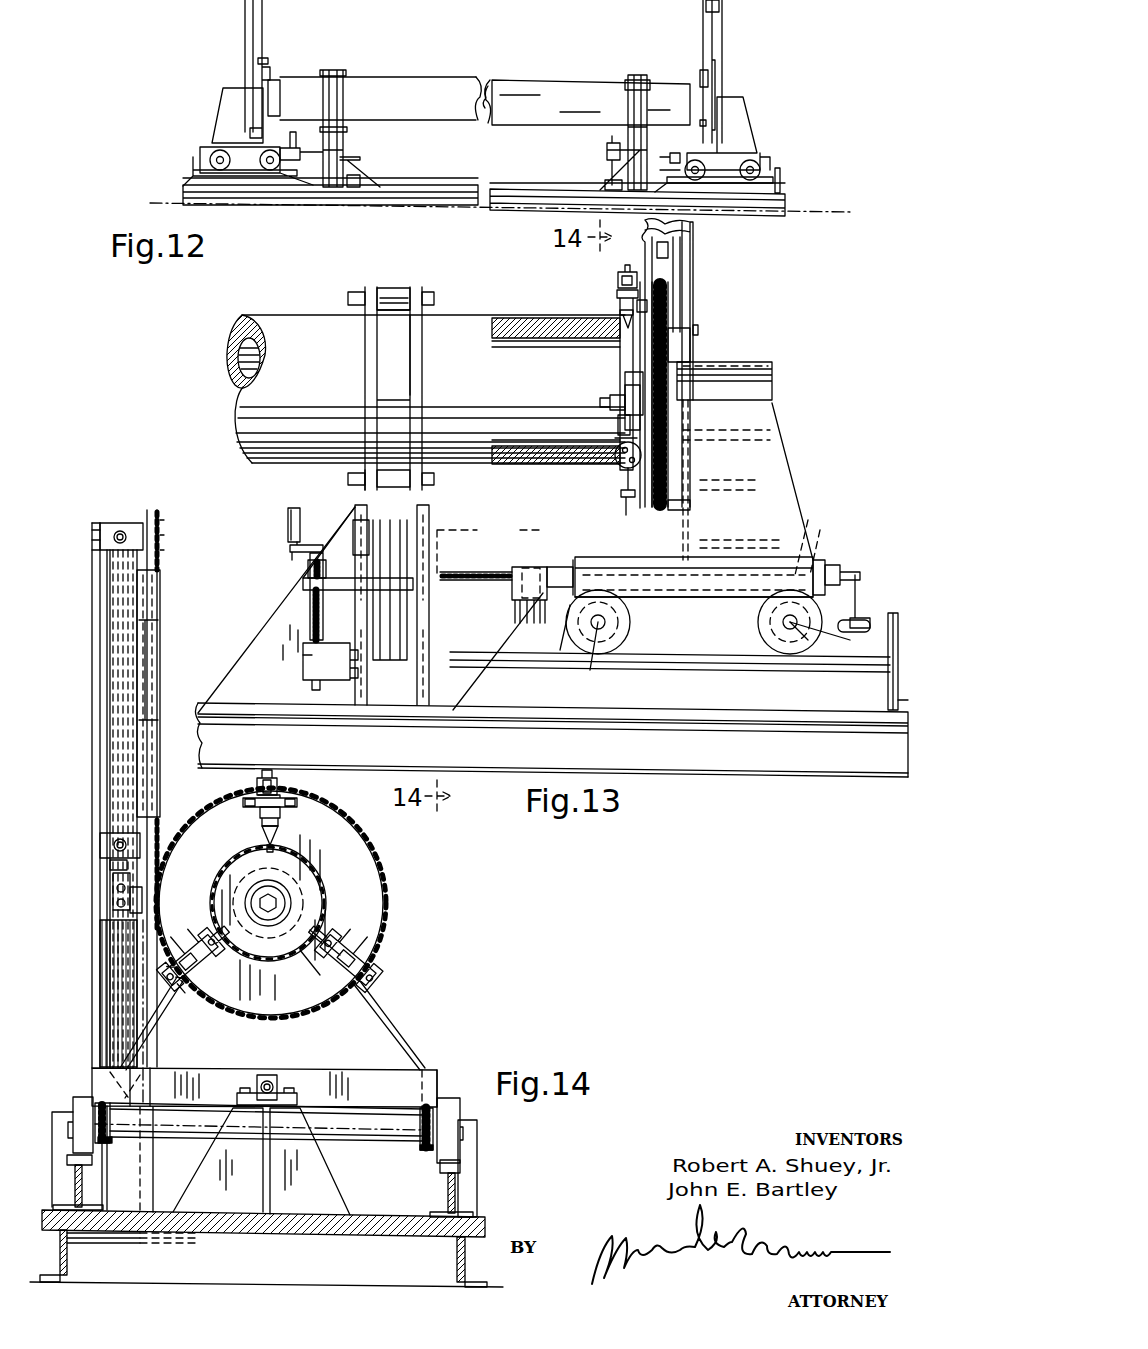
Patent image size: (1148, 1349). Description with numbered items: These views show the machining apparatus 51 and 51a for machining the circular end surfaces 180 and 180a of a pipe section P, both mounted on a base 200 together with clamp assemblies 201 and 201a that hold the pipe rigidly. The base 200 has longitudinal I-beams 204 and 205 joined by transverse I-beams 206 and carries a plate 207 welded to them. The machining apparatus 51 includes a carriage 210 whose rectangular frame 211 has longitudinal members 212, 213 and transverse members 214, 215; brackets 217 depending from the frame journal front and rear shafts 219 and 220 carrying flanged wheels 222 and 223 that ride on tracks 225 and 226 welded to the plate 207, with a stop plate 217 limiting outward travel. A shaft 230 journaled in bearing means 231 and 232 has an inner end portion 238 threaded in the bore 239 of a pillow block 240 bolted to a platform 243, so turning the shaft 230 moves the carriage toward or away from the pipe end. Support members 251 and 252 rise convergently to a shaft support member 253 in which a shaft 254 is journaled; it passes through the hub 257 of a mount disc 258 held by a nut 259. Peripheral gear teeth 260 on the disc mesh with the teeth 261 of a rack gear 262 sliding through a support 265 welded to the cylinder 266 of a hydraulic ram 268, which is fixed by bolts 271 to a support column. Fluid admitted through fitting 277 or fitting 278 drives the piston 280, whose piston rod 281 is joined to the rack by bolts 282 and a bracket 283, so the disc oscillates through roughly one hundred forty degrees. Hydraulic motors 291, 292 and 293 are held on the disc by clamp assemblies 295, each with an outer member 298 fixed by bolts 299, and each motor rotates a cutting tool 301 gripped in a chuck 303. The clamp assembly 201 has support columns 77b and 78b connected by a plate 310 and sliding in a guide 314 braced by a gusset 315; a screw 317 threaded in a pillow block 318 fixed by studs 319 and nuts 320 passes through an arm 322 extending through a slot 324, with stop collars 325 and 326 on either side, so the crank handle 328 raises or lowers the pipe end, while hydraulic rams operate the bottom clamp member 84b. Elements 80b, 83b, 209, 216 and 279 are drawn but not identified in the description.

In FIG. 12, the machining apparatus 51 is at (692, 53).
In FIG. 13, the machining apparatus 51 is at (721, 286).
In FIG. 12, the machining apparatus 51a is at (274, 45).
In FIG. 12, the support column 77b is at (633, 108).
In FIG. 13, the support column 77b is at (368, 382).
In FIG. 12, the support column 78b is at (660, 114).
In FIG. 13, the support column 78b is at (422, 372).
In FIG. 13, the clamp 80b is at (400, 352).
In FIG. 13, the clamp cross bar 83b is at (392, 288).
In FIG. 13, the bottom clamp member 84b is at (415, 478).
In FIG. 12, the circular end surface 180 is at (278, 90).
In FIG. 12, the circular end surface 180a is at (700, 98).
In FIG. 13, the circular end surface 180a is at (635, 340).
In FIG. 12, the base 200 is at (452, 205).
In FIG. 12, the clamp assembly 201 is at (628, 67).
In FIG. 13, the clamp assembly 201 is at (446, 283).
In FIG. 12, the clamp assembly 201a is at (357, 66).
In FIG. 12, the longitudinal I-beam 204 is at (390, 205).
In FIG. 14, the longitudinal I-beam 204 is at (465, 1250).
In FIG. 14, the longitudinal I-beam 205 is at (60, 1265).
In FIG. 14, the transversely extending I-beam 206 is at (255, 1282).
In FIG. 13, the plate 207 is at (205, 700).
In FIG. 14, the plate 207 is at (485, 1217).
In FIG. 13, the base frame 209 is at (670, 762).
In FIG. 13, the carriage 210 is at (817, 558).
In FIG. 14, the rectangular frame 211 is at (460, 1055).
In FIG. 13, the longitudinal member 212 is at (708, 598).
In FIG. 14, the longitudinal member 212 is at (440, 1090).
In FIG. 14, the longitudinal member 213 is at (100, 1078).
In FIG. 13, the transverse member 214 is at (567, 567).
In FIG. 13, the transverse member 215 is at (828, 567).
In FIG. 14, the pinion 216 is at (425, 1148).
In FIG. 13, the bracket 217 is at (630, 615).
In FIG. 14, the bracket 217 is at (100, 1140).
In FIG. 13, the front shaft 219 is at (600, 628).
In FIG. 14, the front shaft 219 is at (348, 1132).
In FIG. 13, the rear shaft 220 is at (783, 625).
In FIG. 13, the flanged wheels 222 is at (580, 640).
In FIG. 13, the flanged wheels 223 is at (812, 640).
In FIG. 13, the track 225 is at (663, 714).
In FIG. 14, the track 225 is at (460, 1180).
In FIG. 14, the track 226 is at (85, 1195).
In FIG. 13, the shaft 230 is at (758, 569).
In FIG. 14, the shaft 230 is at (278, 1080).
In FIG. 13, the bearing means 231 is at (595, 575).
In FIG. 13, the bearing means 232 is at (819, 541).
In FIG. 13, the inner end portion 238 is at (475, 572).
In FIG. 13, the threaded bore 239 is at (520, 570).
In FIG. 13, the block 240 is at (512, 590).
In FIG. 14, the block 240 is at (272, 1075).
In FIG. 14, the platform 243 is at (303, 1110).
In FIG. 13, the support member 251 is at (782, 478).
In FIG. 14, the support member 251 is at (398, 1025).
In FIG. 14, the support member 252 is at (160, 1005).
In FIG. 13, the shaft support member 253 is at (762, 370).
In FIG. 13, the shaft 254 is at (612, 403).
In FIG. 13, the hub 257 is at (606, 398).
In FIG. 13, the mount disc 258 is at (652, 508).
In FIG. 13, the nut 259 is at (618, 420).
In FIG. 14, the peripheral gear teeth 260 is at (383, 910).
In FIG. 14, the teeth 261 is at (162, 540).
In FIG. 14, the rack gear 262 is at (165, 492).
In FIG. 14, the support 265 is at (160, 592).
In FIG. 14, the cylinder 266 is at (110, 645).
In FIG. 14, the hydraulic ram 268 is at (96, 590).
In FIG. 14, the bolts 271 is at (92, 523).
In FIG. 14, the fitting 277 is at (120, 525).
In FIG. 14, the fitting 278 is at (110, 838).
In FIG. 14, the column base 279 is at (100, 955).
In FIG. 14, the piston 280 is at (92, 542).
In FIG. 14, the piston rod 281 is at (110, 865).
In FIG. 14, the bolts 282 is at (115, 903).
In FIG. 14, the bracket 283 is at (130, 905).
In FIG. 14, the hydraulic motor 291 is at (278, 782).
In FIG. 14, the hydraulic motor 292 is at (345, 935).
In FIG. 14, the hydraulic motor 293 is at (198, 940).
In FIG. 14, the clamp assembly 295 is at (250, 810).
In FIG. 14, the outer member 298 is at (282, 825).
In FIG. 14, the bolts 299 is at (287, 810).
In FIG. 13, the cutting tool 301 is at (618, 318).
In FIG. 14, the cutting tool 301 is at (268, 847).
In FIG. 14, the chuck 303 is at (330, 952).
In FIG. 13, the plate 310 is at (400, 665).
In FIG. 13, the guide 314 is at (356, 508).
In FIG. 13, the reinforcing gusset 315 is at (312, 612).
In FIG. 13, the screw 317 is at (303, 588).
In FIG. 13, the pillow block 318 is at (305, 672).
In FIG. 13, the studs 319 is at (340, 655).
In FIG. 13, the nuts 320 is at (303, 648).
In FIG. 13, the arm 322 is at (398, 575).
In FIG. 13, the slot 324 is at (350, 545).
In FIG. 13, the stop collar 325 is at (300, 562).
In FIG. 13, the stop collar 326 is at (308, 575).
In FIG. 13, the crank handle 328 is at (288, 520).
In FIG. 13, the pipe section P is at (505, 450).